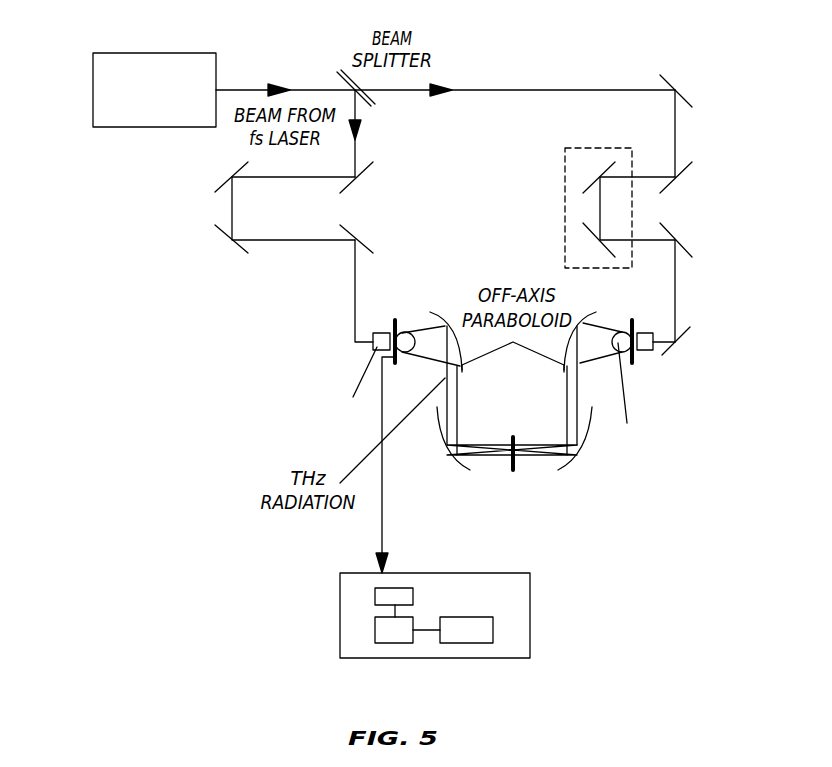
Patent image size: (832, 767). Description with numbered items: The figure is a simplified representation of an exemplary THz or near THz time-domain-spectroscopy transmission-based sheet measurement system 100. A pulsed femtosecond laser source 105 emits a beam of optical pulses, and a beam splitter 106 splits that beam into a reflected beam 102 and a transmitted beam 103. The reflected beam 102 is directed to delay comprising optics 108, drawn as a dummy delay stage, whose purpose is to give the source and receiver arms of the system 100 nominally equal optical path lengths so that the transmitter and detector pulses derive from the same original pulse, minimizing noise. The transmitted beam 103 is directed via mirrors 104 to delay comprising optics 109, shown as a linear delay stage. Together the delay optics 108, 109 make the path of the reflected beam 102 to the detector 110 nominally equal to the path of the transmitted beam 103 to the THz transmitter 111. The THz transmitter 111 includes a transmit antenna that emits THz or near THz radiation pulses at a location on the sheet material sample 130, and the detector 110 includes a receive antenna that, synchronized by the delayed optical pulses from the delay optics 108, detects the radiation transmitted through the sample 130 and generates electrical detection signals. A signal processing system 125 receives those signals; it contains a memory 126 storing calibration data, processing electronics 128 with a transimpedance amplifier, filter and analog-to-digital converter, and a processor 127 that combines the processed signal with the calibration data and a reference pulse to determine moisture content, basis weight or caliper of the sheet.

The THz-TDS transmission-based sheet measurement system 100 is at (649, 629).
The reflected beam 102 is at (356, 150).
The transmitted beam 103 is at (463, 90).
The mirrors 104 is at (660, 75).
The pulsed laser source 105 is at (117, 53).
The beam splitter 106 is at (338, 73).
The delay comprising optics 108 is at (198, 218).
The delay comprising optics 109 is at (670, 211).
The detector 110 is at (391, 320).
The THz transmitter 111 is at (635, 323).
The signal processing system 125 is at (477, 573).
The memory 126 is at (477, 617).
The processor 127 is at (375, 636).
The processing electronics 128 is at (375, 600).
The sample 130 is at (513, 433).